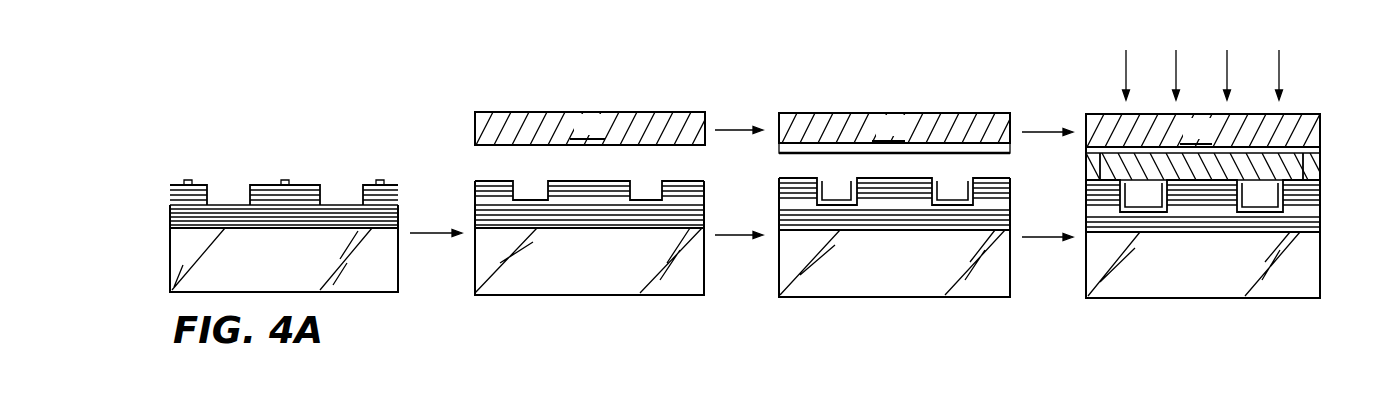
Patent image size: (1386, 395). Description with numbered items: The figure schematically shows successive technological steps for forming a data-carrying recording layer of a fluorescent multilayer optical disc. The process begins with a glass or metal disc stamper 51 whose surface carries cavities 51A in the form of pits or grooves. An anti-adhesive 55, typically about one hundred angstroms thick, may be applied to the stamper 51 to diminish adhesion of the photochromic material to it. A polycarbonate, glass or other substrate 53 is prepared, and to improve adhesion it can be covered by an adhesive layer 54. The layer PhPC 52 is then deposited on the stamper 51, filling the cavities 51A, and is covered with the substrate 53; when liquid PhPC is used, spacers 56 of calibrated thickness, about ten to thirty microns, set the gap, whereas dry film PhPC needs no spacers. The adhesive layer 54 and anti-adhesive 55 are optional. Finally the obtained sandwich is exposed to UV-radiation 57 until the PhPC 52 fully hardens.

The stamper 51 is at (187, 245).
The cavities 51A is at (245, 192).
The layer PhPC 52 is at (798, 178).
The substrate 53 is at (505, 120).
The adhesive layer 54 is at (933, 155).
The anti-adhesive 55 is at (492, 180).
The spacers 56 is at (1090, 167).
The UV-radiation 57 is at (1127, 60).